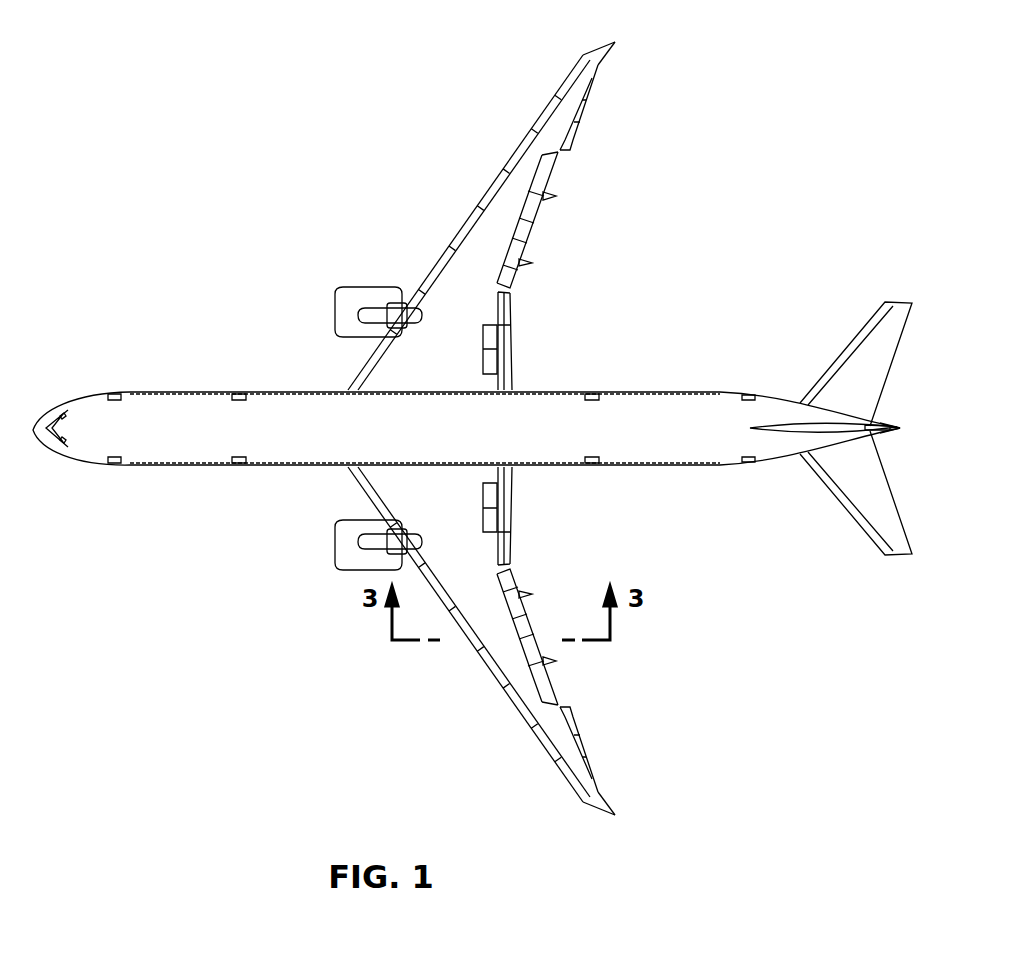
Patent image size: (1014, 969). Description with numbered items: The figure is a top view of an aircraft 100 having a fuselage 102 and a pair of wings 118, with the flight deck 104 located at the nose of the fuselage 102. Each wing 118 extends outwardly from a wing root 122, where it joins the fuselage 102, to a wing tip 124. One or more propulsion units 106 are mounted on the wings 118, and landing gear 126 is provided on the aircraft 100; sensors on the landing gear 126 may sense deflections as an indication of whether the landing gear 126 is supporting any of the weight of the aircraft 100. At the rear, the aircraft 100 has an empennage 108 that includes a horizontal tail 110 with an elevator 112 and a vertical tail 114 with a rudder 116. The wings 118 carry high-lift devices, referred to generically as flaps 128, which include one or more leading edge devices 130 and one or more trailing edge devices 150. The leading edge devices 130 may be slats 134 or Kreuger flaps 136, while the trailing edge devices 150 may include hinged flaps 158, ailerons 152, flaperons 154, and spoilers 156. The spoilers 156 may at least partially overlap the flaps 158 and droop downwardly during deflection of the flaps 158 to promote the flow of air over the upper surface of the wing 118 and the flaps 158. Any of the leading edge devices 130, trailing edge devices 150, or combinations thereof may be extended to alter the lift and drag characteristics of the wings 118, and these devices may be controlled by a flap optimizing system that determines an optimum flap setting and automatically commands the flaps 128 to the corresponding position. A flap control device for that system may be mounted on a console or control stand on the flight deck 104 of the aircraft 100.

The aircraft 100 is at (153, 392).
The fuselage 102 is at (135, 465).
The flight deck 104 is at (63, 448).
The propulsion unit 106 is at (335, 303).
The empennage 108 is at (902, 428).
The horizontal tail 110 is at (840, 355).
The elevator 112 is at (888, 345).
The vertical tail 114 is at (788, 430).
The rudder 116 is at (877, 433).
The wing 118 is at (597, 50).
The wing root 122 is at (473, 390).
The wing tip 124 is at (615, 42).
The landing gear 126 is at (452, 248).
The flap 128 is at (400, 182).
The leading edge device 130 is at (445, 100).
The slat 134 is at (505, 175).
The Kreuger flap 136 is at (383, 512).
The trailing edge device 150 is at (645, 232).
The aileron 152 is at (578, 115).
The flaperon 154 is at (507, 313).
The spoiler 156 is at (525, 232).
The flap 158 is at (525, 245).